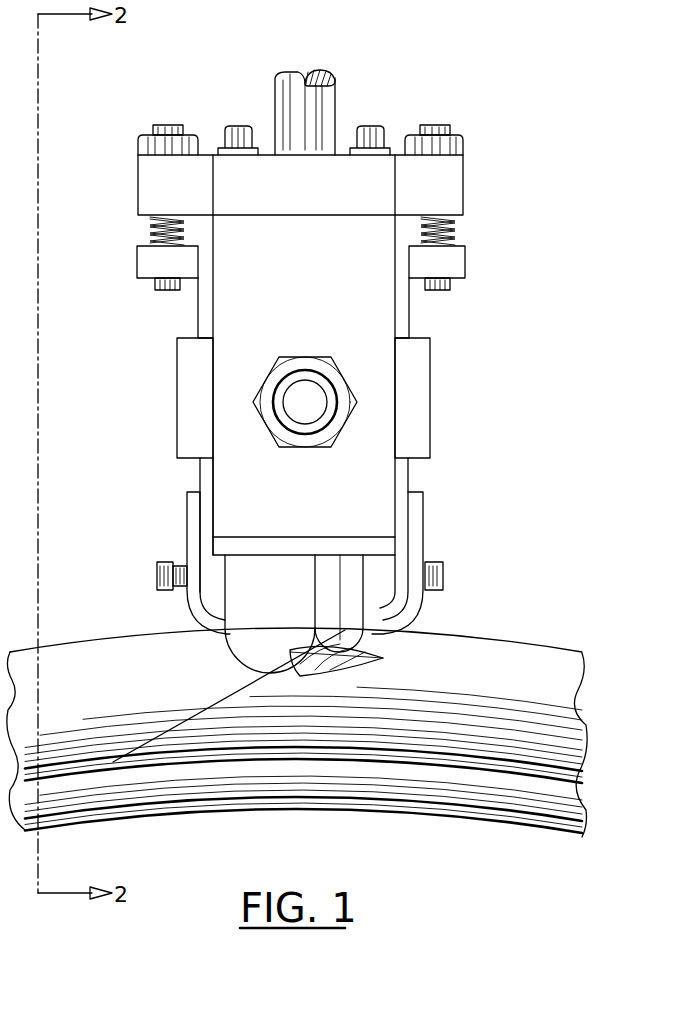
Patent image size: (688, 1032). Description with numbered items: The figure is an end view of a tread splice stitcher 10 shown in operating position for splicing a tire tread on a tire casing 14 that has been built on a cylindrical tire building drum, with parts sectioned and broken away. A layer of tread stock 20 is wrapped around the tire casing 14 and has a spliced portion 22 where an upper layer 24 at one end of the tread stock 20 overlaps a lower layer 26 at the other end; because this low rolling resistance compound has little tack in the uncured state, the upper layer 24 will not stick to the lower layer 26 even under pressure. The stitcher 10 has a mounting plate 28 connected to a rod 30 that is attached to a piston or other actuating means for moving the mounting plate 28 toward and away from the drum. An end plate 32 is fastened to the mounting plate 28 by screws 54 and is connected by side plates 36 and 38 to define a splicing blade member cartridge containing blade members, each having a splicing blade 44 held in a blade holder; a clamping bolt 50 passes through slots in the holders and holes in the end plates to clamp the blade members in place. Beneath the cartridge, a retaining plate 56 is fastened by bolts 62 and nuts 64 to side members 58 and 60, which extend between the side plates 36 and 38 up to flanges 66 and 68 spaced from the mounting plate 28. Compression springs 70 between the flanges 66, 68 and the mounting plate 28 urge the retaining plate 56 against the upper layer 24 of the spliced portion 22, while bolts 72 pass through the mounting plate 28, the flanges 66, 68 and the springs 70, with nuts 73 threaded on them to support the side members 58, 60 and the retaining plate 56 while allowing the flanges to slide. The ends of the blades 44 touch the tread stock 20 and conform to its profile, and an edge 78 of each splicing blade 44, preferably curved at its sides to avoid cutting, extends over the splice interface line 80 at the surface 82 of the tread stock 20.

The tread splice stitcher 10 is at (495, 63).
The tire casing 14 is at (572, 803).
The tread stock 20 is at (540, 655).
The spliced portion 22 is at (204, 742).
The upper layer 24 is at (148, 646).
The lower layer 26 is at (74, 757).
The mounting plate 28 is at (450, 190).
The rod 30 is at (325, 100).
The end plate 32 is at (225, 305).
The side plate 36 is at (190, 372).
The side plate 38 is at (420, 402).
The splicing blade 44 is at (355, 660).
The clamping bolt 50 is at (298, 410).
The screws 54 is at (236, 136).
The retaining plate 56 is at (418, 612).
The side member 58 is at (402, 476).
The side member 60 is at (207, 516).
The bolts 62 is at (432, 572).
The nuts 64 is at (178, 560).
The flange 66 is at (148, 262).
The flange 68 is at (458, 262).
The compression springs 70 is at (150, 230).
The bolts 72 is at (162, 130).
The nuts 73 is at (140, 150).
The edge 78 is at (236, 662).
The splice interface line 80 is at (210, 712).
The surface 82 is at (574, 744).